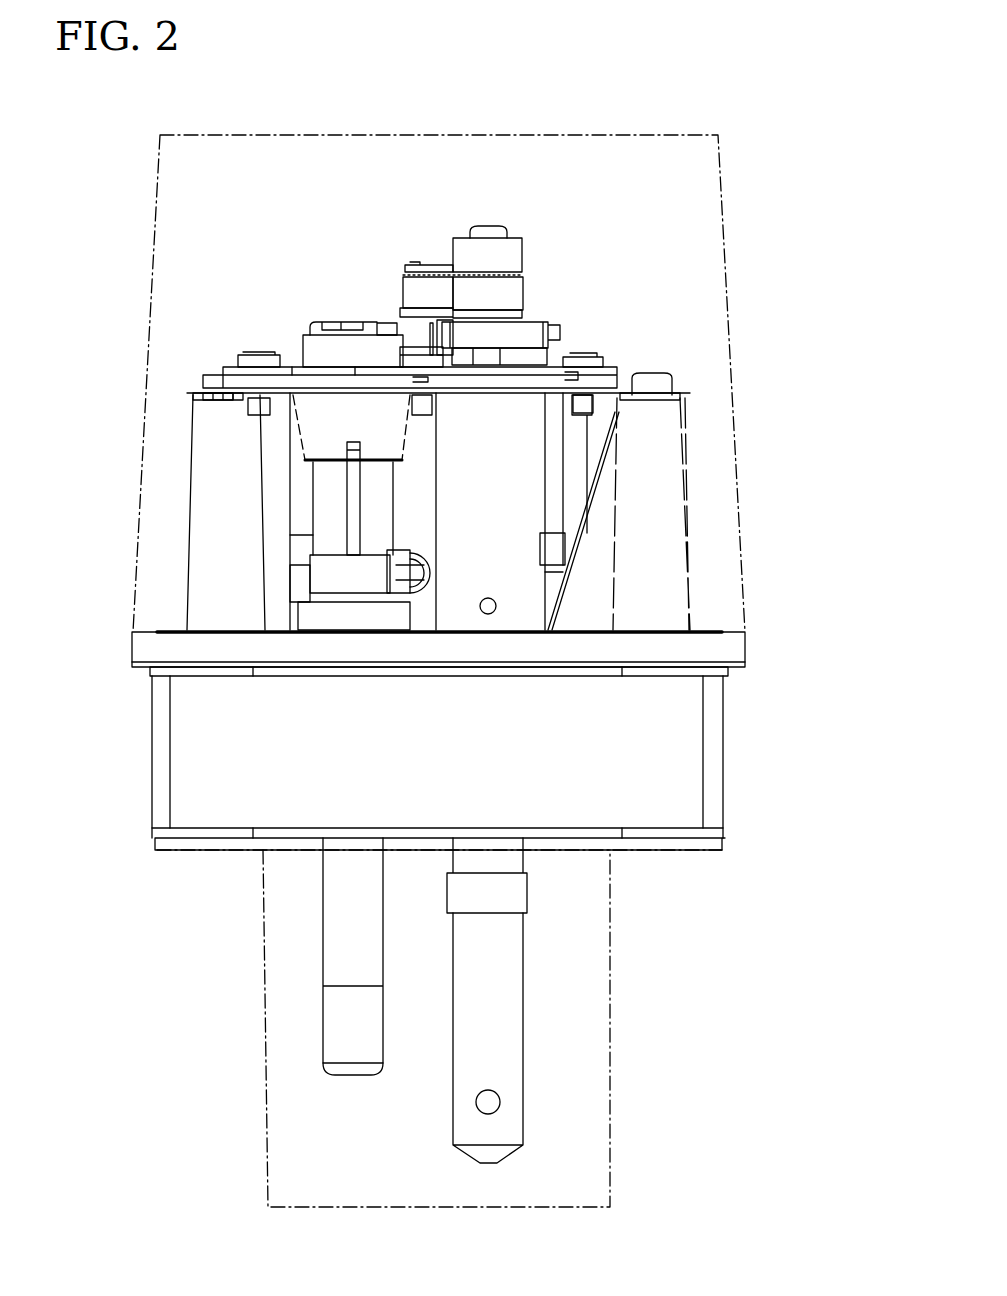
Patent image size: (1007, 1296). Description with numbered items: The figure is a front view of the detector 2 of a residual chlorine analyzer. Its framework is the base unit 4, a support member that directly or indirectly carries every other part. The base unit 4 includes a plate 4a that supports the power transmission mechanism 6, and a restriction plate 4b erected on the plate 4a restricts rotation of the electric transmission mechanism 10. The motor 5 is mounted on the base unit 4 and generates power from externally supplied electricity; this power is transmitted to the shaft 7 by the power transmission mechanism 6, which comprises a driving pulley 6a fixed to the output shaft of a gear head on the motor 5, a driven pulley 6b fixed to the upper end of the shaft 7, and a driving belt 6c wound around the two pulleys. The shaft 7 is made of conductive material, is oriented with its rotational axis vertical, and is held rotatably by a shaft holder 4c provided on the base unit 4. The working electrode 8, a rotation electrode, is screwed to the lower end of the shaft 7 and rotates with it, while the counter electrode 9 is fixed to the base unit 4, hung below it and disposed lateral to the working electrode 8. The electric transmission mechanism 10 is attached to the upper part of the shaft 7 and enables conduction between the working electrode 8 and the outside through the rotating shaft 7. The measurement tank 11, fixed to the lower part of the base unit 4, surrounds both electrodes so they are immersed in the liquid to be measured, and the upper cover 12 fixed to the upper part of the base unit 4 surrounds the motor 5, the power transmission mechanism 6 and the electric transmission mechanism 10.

The detector 2 is at (784, 165).
The base unit 4 is at (145, 650).
The plate 4a is at (613, 372).
The restriction plate 4b is at (428, 330).
The shaft holder 4c is at (528, 478).
The motor 5 is at (298, 498).
The power transmission mechanism 6 is at (541, 284).
The driving pulley 6a is at (420, 262).
The driven pulley 6b is at (515, 258).
The driving belt 6c is at (520, 300).
The shaft 7 is at (500, 357).
The working electrode 8 is at (512, 1060).
The counter electrode 9 is at (335, 1033).
The electric transmission mechanism 10 is at (487, 330).
The measurement tank 11 is at (615, 968).
The upper cover 12 is at (735, 398).